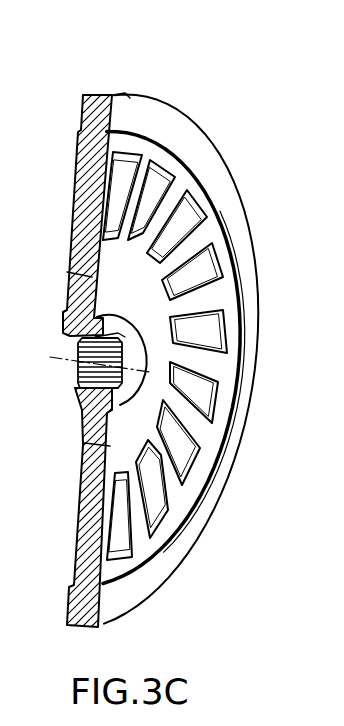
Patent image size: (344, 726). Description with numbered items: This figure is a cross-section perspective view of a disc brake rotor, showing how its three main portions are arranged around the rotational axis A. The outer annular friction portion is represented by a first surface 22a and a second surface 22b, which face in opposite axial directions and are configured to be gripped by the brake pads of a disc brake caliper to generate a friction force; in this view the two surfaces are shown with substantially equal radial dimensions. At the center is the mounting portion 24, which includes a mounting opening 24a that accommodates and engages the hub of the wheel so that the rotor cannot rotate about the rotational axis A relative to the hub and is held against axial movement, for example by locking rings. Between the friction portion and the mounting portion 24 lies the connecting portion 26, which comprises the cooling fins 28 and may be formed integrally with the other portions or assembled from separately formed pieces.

The first surface 22a is at (83, 115).
The second surface 22b is at (170, 122).
The mounting portion 24 is at (125, 330).
The mounting opening 24a is at (80, 375).
The connecting portion 26 is at (208, 297).
The cooling fins 28 is at (157, 503).
The rotational axis A is at (158, 378).